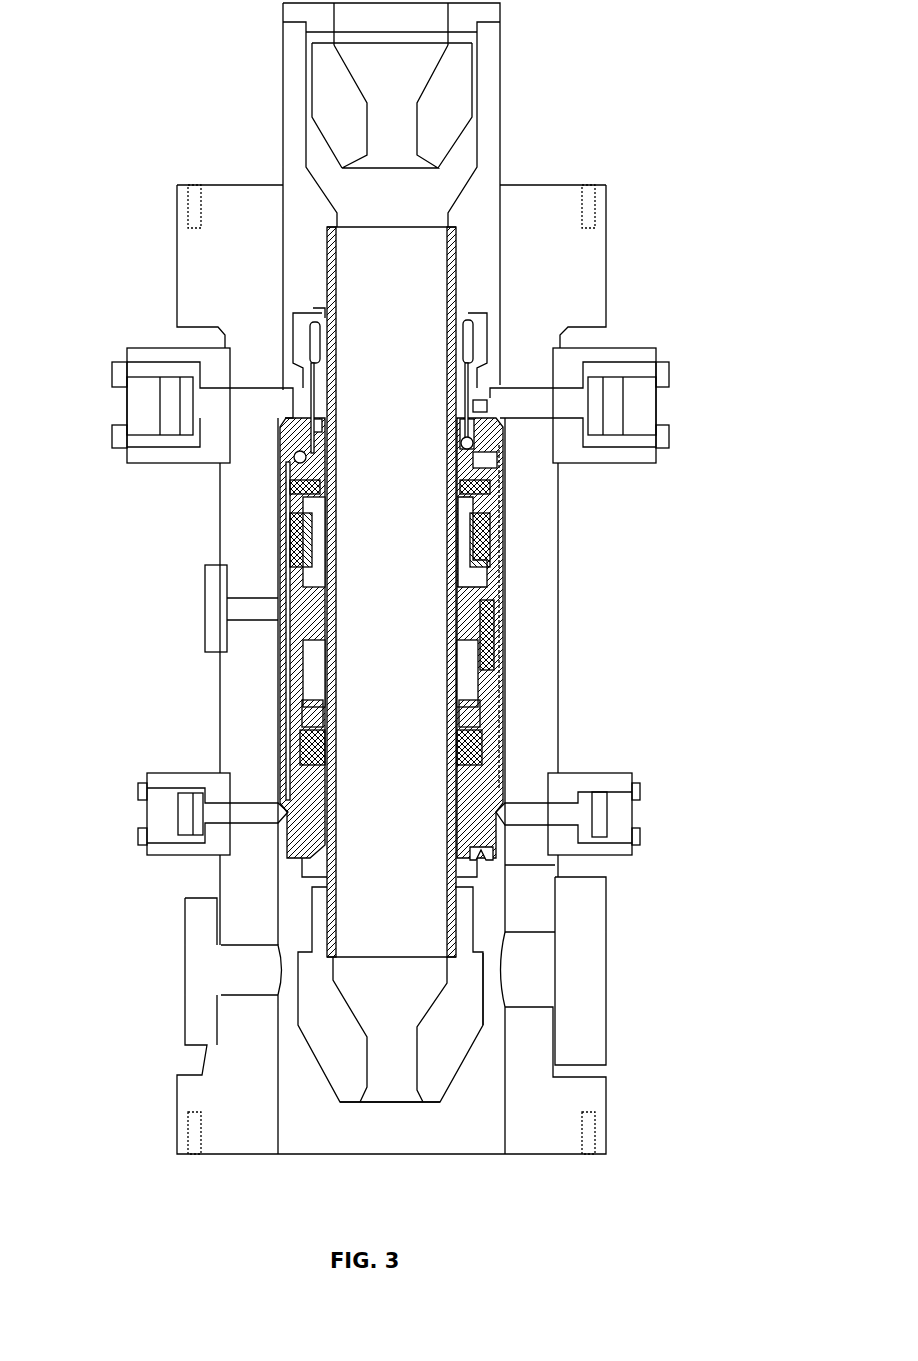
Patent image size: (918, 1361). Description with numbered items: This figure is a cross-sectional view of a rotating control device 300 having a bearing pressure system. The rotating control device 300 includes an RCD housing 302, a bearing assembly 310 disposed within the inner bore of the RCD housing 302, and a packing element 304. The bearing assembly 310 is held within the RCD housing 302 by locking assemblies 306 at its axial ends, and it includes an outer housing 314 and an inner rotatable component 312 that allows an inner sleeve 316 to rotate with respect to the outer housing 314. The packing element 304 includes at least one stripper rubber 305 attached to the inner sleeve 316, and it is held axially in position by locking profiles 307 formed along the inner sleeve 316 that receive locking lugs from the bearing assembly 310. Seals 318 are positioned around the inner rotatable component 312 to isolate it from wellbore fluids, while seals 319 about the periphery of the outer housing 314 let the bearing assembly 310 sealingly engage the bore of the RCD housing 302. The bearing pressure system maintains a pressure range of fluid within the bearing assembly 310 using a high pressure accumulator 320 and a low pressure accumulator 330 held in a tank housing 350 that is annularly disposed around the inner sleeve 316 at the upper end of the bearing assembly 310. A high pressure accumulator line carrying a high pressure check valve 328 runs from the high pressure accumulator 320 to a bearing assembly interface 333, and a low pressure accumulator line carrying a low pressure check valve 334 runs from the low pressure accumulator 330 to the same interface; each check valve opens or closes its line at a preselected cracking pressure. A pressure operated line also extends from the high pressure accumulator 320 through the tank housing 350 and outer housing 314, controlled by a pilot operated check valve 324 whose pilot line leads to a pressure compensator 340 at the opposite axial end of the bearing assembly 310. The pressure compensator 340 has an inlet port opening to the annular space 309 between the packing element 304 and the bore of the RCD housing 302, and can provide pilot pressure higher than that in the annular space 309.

The rotating control device 300 is at (647, 63).
The RCD housing 302 is at (391, 578).
The packing element 304 is at (440, 1106).
The stripper rubber 305 is at (463, 115).
The locking assemblies 306 is at (142, 350).
The locking profiles 307 is at (303, 507).
The annular space 309 is at (492, 1035).
The bearing assembly 310 is at (512, 575).
The inner rotatable component 312 is at (490, 662).
The outer housing 314 is at (505, 628).
The inner sleeve 316 is at (457, 928).
The seals 318 is at (300, 556).
The seals 319 is at (280, 433).
The high pressure accumulator 320 is at (472, 340).
The pilot operated check valve 324 is at (487, 398).
The high pressure check valve 328 is at (461, 445).
The low pressure accumulator 330 is at (293, 313).
The bearing assembly interface 333 is at (303, 683).
The low pressure check valve 334 is at (306, 450).
The pressure compensator 340 is at (490, 860).
The tank housing 350 is at (312, 308).